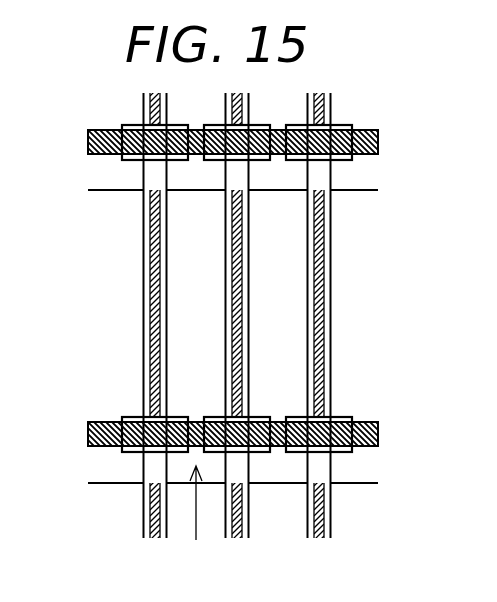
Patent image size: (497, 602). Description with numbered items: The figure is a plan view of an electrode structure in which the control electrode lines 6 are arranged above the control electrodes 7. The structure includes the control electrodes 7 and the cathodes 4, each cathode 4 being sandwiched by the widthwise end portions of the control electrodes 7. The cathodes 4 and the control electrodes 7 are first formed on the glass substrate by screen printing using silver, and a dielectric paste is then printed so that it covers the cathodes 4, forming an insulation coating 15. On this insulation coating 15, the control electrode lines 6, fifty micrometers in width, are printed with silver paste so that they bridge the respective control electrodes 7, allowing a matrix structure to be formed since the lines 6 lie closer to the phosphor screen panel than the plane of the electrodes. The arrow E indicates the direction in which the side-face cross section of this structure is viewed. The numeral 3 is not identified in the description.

The through hole 3 is at (318, 178).
The cathode 4 is at (320, 270).
The control electrode 7 is at (135, 293).
The insulation coating 15 is at (352, 418).
The control electrode line 6 is at (378, 442).
The arrow E is at (195, 521).